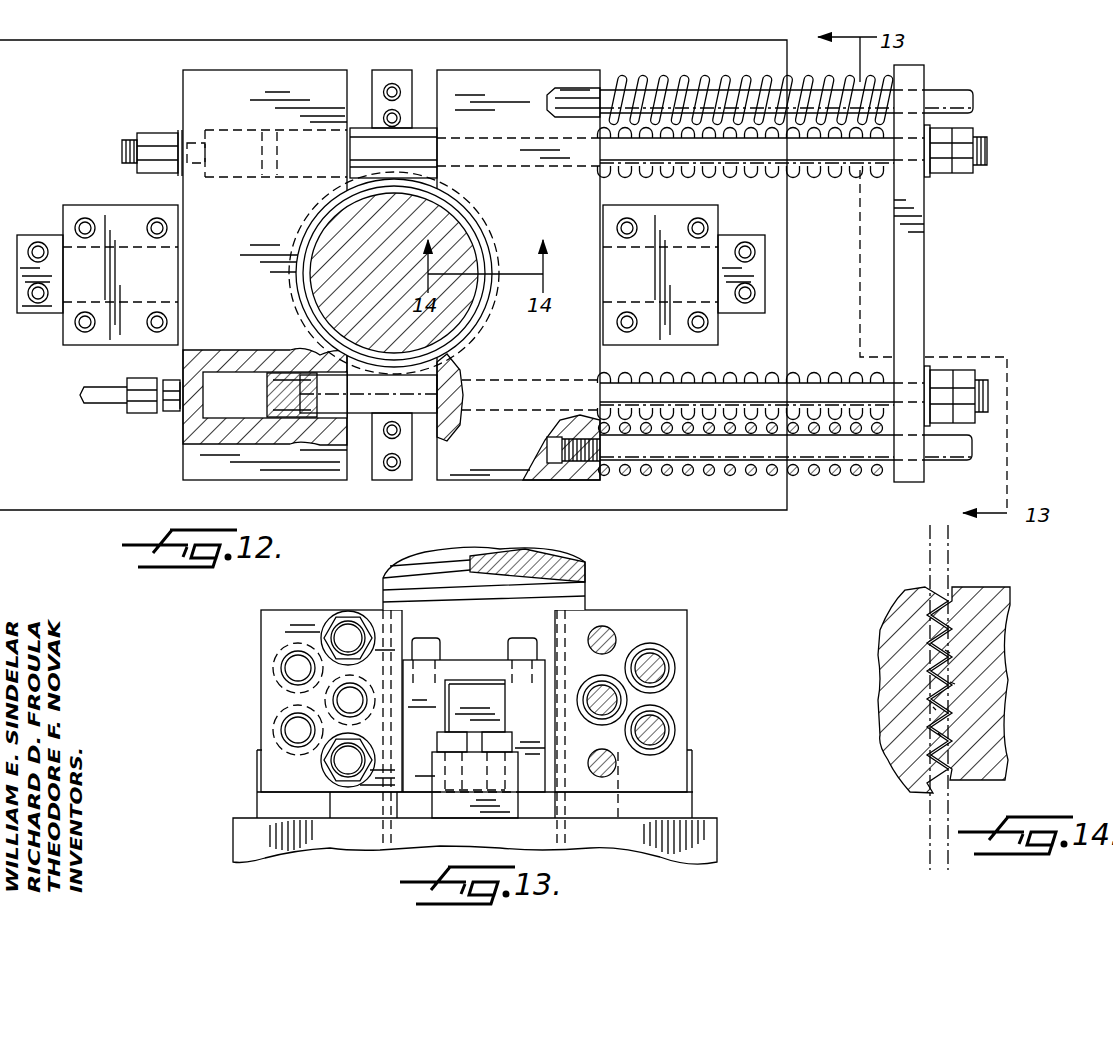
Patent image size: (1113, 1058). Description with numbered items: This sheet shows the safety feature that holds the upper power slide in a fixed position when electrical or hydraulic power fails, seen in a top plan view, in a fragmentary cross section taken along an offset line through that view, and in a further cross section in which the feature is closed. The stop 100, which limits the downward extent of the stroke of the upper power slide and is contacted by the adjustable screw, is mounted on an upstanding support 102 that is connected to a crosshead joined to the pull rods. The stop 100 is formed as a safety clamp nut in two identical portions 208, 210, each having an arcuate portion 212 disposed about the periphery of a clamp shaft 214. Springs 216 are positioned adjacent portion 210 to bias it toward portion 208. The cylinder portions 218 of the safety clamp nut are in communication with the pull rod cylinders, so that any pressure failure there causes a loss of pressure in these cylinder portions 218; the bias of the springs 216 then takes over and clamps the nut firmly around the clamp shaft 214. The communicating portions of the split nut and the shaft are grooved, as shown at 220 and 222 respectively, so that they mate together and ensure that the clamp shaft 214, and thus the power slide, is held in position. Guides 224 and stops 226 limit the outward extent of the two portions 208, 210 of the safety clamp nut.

In FIG. 12, the stop 100 is at (331, 263).
In FIG. 13, the stop 100 is at (602, 606).
In FIG. 12, the upstanding support 102 is at (51, 446).
In FIG. 13, the upstanding support 102 is at (710, 842).
In FIG. 12, the first portion of the stop 208 is at (229, 263).
In FIG. 12, the second portion of the stop 210 is at (550, 362).
In FIG. 13, the second portion of the stop 210 is at (665, 622).
In FIG. 14, the second portion of the stop 210 is at (998, 642).
In FIG. 12, the arcuate portion 212 is at (300, 243).
In FIG. 14, the arcuate portion 212 is at (935, 597).
In FIG. 12, the clamp shaft 214 is at (389, 274).
In FIG. 13, the clamp shaft 214 is at (555, 560).
In FIG. 14, the clamp shaft 214 is at (892, 678).
In FIG. 12, the springs 216 is at (750, 80).
In FIG. 13, the springs 216 is at (283, 715).
In FIG. 12, the cylinder portions 218 is at (240, 132).
In FIG. 14, the grooves of the split nut 220 is at (938, 733).
In FIG. 14, the grooves of the shaft 222 is at (950, 682).
In FIG. 12, the guides 224 is at (115, 213).
In FIG. 13, the guides 224 is at (490, 662).
In FIG. 12, the stops 226 is at (33, 315).
In FIG. 13, the stops 226 is at (473, 812).